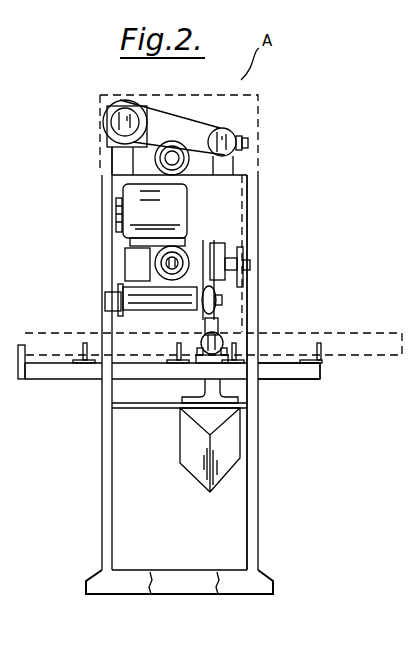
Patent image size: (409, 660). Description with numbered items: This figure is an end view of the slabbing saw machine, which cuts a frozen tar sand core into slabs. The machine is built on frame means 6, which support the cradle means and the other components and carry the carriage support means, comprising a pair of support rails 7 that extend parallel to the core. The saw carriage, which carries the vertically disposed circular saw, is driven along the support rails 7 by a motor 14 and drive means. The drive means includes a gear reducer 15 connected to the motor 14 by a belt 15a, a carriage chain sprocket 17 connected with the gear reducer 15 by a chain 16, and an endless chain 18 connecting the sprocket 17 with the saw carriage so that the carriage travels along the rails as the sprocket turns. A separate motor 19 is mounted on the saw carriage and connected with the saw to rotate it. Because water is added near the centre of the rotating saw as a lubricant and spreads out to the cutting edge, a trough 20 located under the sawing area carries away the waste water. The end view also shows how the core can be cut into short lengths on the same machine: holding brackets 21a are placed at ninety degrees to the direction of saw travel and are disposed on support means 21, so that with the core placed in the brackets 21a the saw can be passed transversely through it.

The frame means 6 is at (257, 523).
The support rails 7 is at (162, 157).
The motor 14 is at (113, 118).
The gear reducer 15 is at (237, 129).
The belt 15a is at (176, 116).
The chain 16 is at (258, 210).
The carriage chain sprocket 17 is at (233, 246).
The endless chain 18 is at (203, 272).
The motor 19 is at (129, 205).
The trough 20 is at (228, 447).
The support means 21 is at (77, 372).
The holding brackets 21a is at (325, 358).